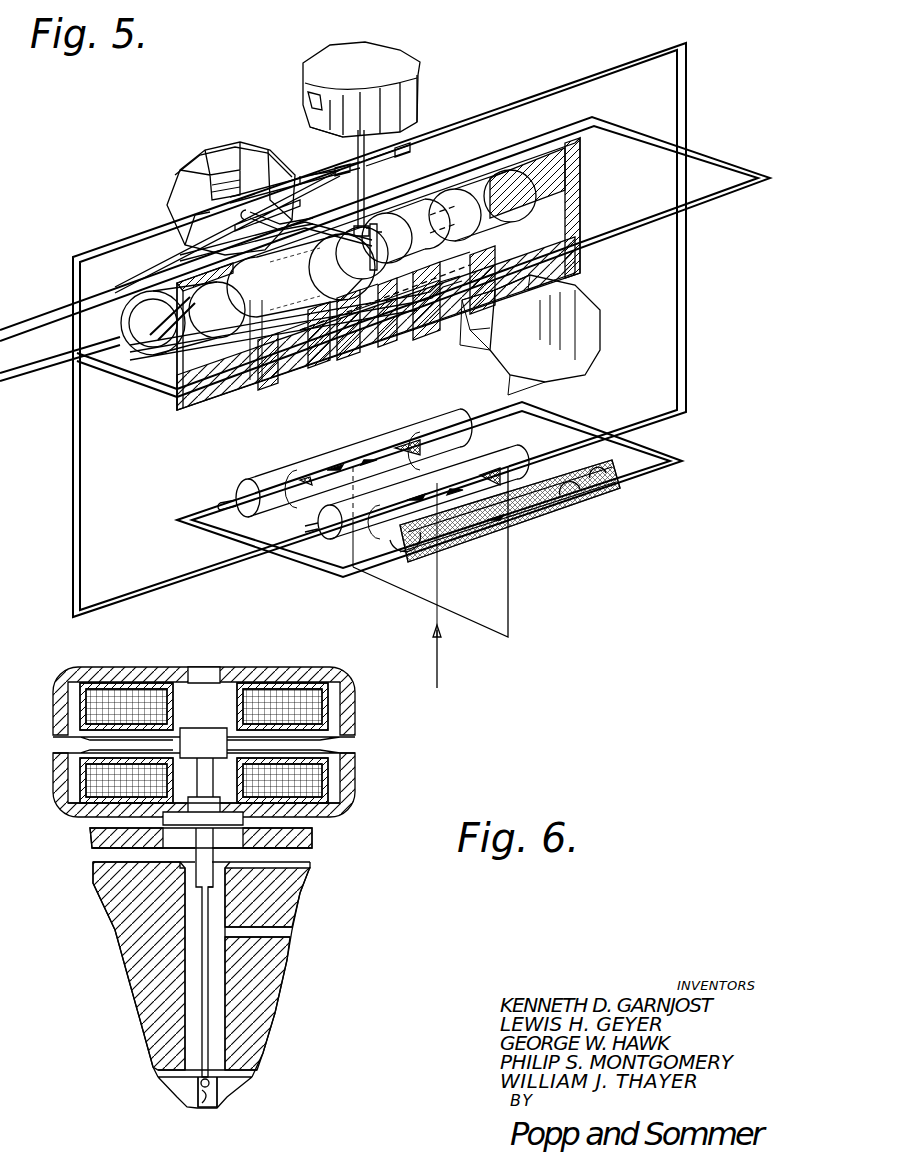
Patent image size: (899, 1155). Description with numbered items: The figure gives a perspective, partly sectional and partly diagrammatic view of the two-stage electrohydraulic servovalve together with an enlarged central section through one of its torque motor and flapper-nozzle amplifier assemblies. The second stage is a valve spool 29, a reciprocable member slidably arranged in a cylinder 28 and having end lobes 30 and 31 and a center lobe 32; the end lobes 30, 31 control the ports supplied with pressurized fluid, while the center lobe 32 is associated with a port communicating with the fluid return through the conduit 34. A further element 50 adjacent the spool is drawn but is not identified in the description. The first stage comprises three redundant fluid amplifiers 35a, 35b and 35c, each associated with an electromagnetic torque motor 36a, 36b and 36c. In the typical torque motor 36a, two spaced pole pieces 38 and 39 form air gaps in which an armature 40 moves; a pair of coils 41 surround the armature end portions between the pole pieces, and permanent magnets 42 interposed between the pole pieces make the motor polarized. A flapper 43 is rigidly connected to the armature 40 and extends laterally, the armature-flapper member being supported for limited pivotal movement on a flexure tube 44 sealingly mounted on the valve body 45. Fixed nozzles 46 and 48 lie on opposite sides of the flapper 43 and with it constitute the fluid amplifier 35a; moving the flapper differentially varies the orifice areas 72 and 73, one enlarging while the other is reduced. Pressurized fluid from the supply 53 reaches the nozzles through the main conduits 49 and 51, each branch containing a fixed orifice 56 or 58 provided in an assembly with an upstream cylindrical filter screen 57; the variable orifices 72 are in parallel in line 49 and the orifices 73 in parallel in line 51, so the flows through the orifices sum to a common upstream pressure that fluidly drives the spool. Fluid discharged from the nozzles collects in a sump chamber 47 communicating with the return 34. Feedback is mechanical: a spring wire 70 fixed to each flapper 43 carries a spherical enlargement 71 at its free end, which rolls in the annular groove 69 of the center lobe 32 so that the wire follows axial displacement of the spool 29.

In FIG. 5, the cylinder 28 is at (121, 318).
In FIG. 5, the valve spool 29 is at (409, 218).
In FIG. 6, the valve spool 29 is at (160, 1094).
In FIG. 5, the end lobe 30 is at (275, 272).
In FIG. 5, the end lobe 31 is at (485, 205).
In FIG. 5, the center lobe 32 is at (406, 231).
In FIG. 6, the center lobe 32 is at (243, 1090).
In FIG. 6, the return conduit 34 is at (282, 936).
In FIG. 5, the fluid amplifier 35a is at (282, 216).
In FIG. 6, the fluid amplifier 35a is at (316, 887).
In FIG. 5, the fluid amplifier 35b is at (372, 168).
In FIG. 5, the fluid amplifier 35c is at (446, 322).
In FIG. 5, the electromagnetic torque motor 36a is at (177, 172).
In FIG. 6, the electromagnetic torque motor 36a is at (265, 667).
In FIG. 5, the electromagnetic torque motor 36b is at (419, 46).
In FIG. 5, the electromagnetic torque motor 36c is at (603, 306).
In FIG. 6, the pole piece 38 is at (138, 672).
In FIG. 6, the pole piece 39 is at (80, 820).
In FIG. 6, the armature 40 is at (355, 750).
In FIG. 6, the coils 41 is at (236, 712).
In FIG. 5, the permanent magnet 42 is at (262, 160).
In FIG. 5, the flapper 43 is at (357, 200).
In FIG. 6, the flapper 43 is at (214, 890).
In FIG. 6, the flexure tube 44 is at (196, 790).
In FIG. 6, the valve body 45 is at (316, 838).
In FIG. 5, the fixed nozzle 46 is at (345, 160).
In FIG. 6, the fixed nozzle 46 is at (150, 864).
In FIG. 6, the sump chamber 47 is at (185, 1005).
In FIG. 5, the fixed nozzle 48 is at (413, 148).
In FIG. 6, the fixed nozzle 48 is at (262, 864).
In FIG. 5, the conduit 49 is at (73, 490).
In FIG. 5, the disk 50 is at (192, 308).
In FIG. 5, the conduit 51 is at (687, 312).
In FIG. 5, the pressurized fluid supply 53 is at (436, 655).
In FIG. 5, the fixed orifice 56 is at (405, 570).
In FIG. 5, the cylindrical filter screen 57 is at (374, 472).
In FIG. 5, the fixed orifice 58 is at (575, 505).
In FIG. 5, the annular groove 69 is at (362, 263).
In FIG. 6, the annular groove 69 is at (192, 1110).
In FIG. 5, the mechanical force feedback element 70 is at (366, 183).
In FIG. 6, the mechanical force feedback element 70 is at (208, 962).
In FIG. 5, the spherical enlargement 71 is at (375, 224).
In FIG. 6, the spherical enlargement 71 is at (215, 1100).
In FIG. 6, the variable orifice 72 is at (192, 855).
In FIG. 6, the variable orifice 73 is at (212, 855).